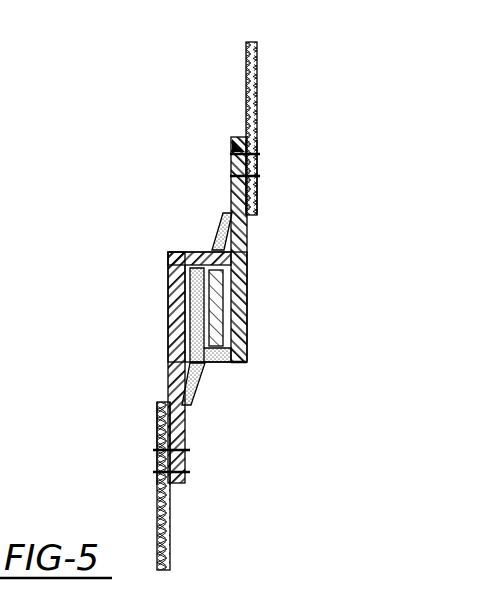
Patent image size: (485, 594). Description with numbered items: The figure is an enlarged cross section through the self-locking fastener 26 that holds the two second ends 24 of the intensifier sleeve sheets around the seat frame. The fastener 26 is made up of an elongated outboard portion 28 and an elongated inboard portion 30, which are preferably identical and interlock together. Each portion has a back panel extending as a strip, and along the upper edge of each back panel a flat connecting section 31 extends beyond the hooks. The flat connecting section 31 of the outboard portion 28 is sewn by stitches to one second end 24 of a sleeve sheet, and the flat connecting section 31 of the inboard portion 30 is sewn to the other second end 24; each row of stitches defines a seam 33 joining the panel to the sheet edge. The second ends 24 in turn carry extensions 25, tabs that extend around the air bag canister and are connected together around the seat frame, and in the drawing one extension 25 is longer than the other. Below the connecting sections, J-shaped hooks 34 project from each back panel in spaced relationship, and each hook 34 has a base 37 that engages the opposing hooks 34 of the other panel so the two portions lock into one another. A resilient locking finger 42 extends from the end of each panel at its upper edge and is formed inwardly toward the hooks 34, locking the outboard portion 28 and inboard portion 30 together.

The second end 24 is at (256, 215).
The extension 25 is at (258, 70).
The self-locking fastener 26 is at (124, 230).
The outboard portion 28 is at (180, 336).
The inboard portion 30 is at (238, 364).
The flat connecting section 31 is at (230, 225).
The seam 33 is at (258, 175).
The J-shaped hook 34 is at (200, 333).
The base 37 is at (180, 252).
The resilient locking finger 42 is at (216, 228).